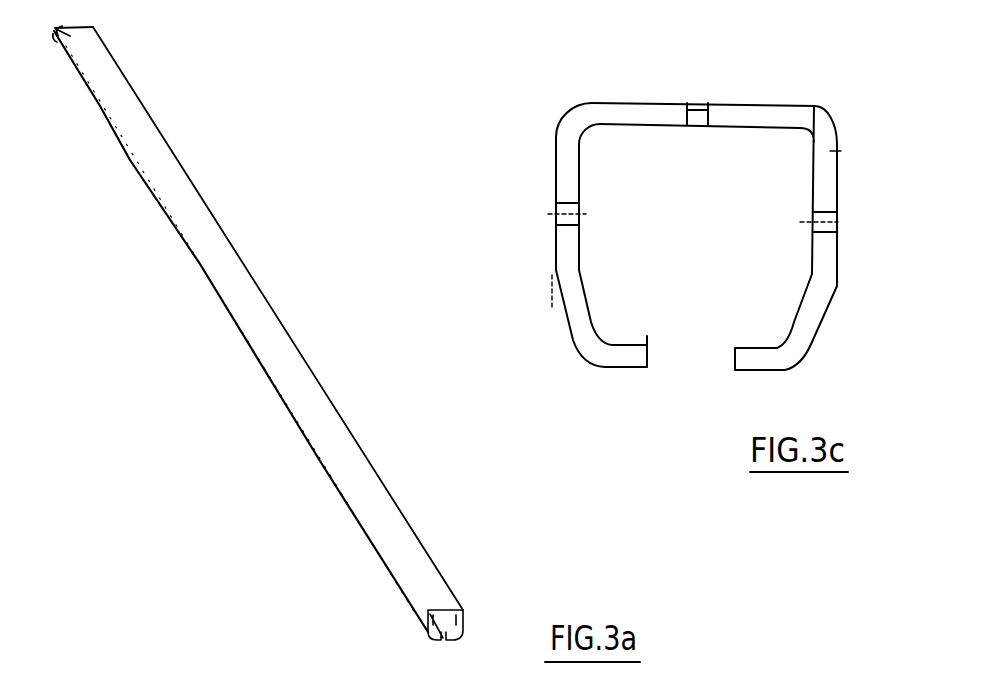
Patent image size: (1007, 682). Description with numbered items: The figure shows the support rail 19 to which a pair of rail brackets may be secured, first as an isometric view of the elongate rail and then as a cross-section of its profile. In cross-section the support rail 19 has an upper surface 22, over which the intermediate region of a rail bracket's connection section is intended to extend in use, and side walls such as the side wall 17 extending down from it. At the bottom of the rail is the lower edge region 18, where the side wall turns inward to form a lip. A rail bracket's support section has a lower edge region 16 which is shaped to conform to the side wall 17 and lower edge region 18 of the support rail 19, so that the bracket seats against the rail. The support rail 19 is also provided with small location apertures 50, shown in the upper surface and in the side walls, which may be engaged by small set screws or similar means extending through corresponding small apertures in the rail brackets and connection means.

In FIG. 3A, the support rail 19 is at (233, 267).
In FIG. 3C, the support rail 19 is at (704, 251).
In FIG. 3C, the upper surface 22 is at (738, 105).
In FIG. 3C, the lower edge region 16 is at (567, 289).
In FIG. 3C, the side wall 17 is at (816, 333).
In FIG. 3C, the lower edge region 18 is at (608, 369).
In FIG. 3C, the location apertures 50 is at (698, 103).